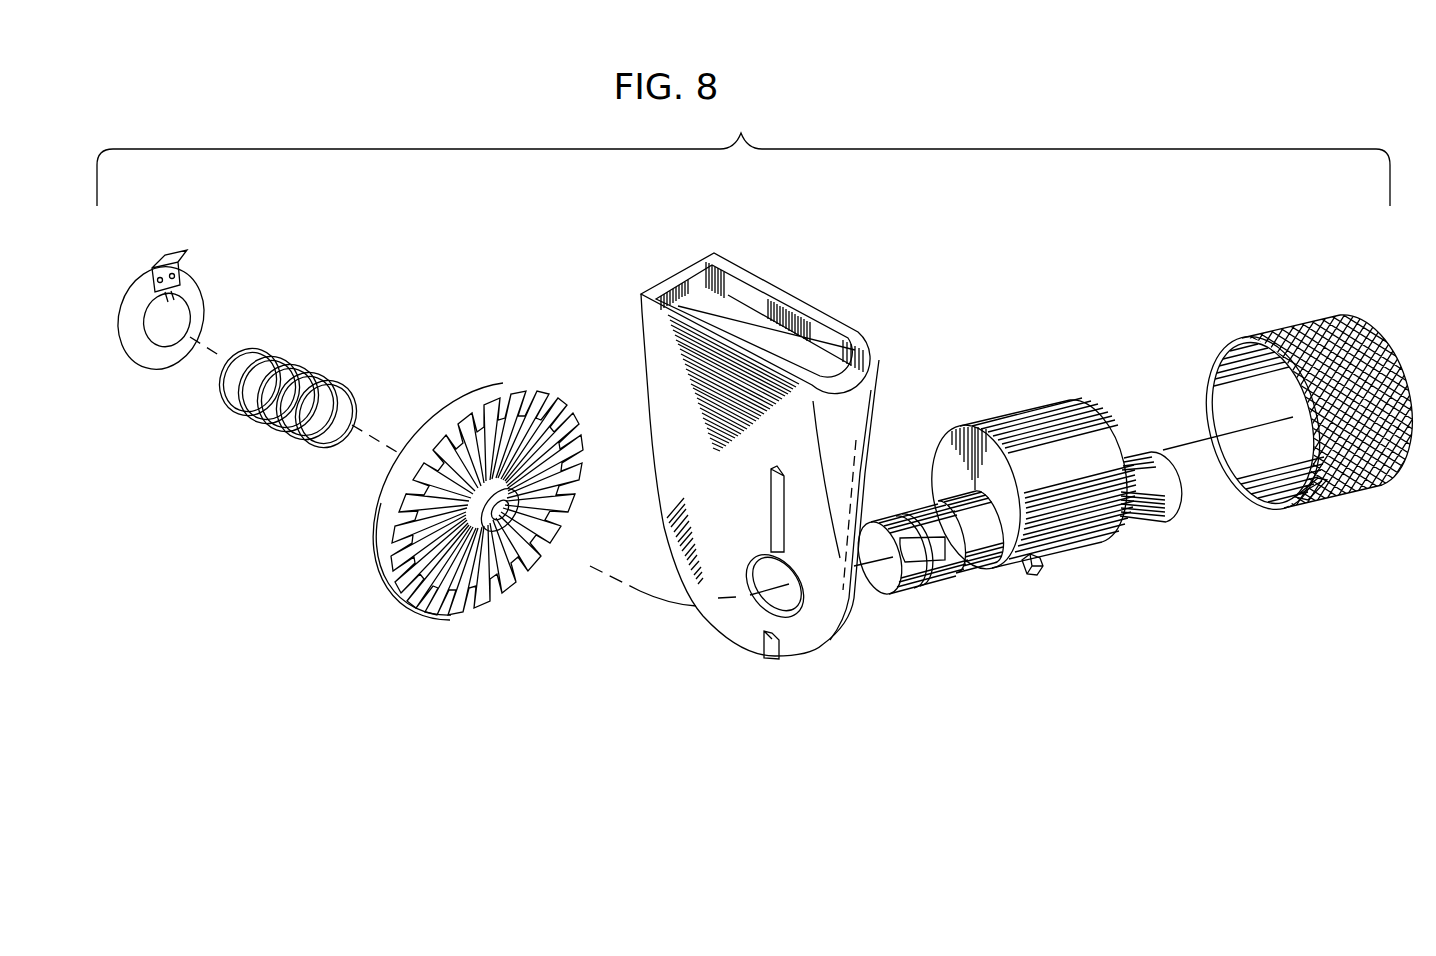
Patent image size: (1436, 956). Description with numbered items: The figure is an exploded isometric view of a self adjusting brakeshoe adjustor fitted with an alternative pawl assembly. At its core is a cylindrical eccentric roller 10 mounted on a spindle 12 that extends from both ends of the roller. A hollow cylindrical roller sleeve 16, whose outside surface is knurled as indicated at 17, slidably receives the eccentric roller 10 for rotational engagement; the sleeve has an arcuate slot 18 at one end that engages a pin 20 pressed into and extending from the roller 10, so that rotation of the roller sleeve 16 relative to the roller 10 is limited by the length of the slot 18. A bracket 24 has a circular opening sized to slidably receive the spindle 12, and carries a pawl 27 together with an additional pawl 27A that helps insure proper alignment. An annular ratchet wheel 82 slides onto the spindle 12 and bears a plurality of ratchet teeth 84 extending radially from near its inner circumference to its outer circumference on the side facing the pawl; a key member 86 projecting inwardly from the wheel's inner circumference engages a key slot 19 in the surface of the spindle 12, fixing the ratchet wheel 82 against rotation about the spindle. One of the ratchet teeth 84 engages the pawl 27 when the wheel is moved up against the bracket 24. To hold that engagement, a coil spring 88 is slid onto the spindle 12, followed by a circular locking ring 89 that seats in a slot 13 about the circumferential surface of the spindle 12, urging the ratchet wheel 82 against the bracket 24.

The eccentric roller 10 is at (1070, 412).
The spindle 12 is at (1143, 490).
The slot 13 is at (913, 590).
The roller sleeve 16 is at (1270, 410).
The knurled surface 17 is at (1373, 467).
The slot 18 is at (1327, 480).
The key slot 19 is at (932, 547).
The pin 20 is at (1037, 573).
The bracket 24 is at (664, 326).
The pawl 27 is at (779, 516).
The pawl 27A is at (771, 659).
The ratchet wheel 82 is at (388, 570).
The ratchet teeth 84 is at (452, 617).
The key member 86 is at (522, 505).
The coil spring 88 is at (250, 407).
The locking ring 89 is at (140, 360).